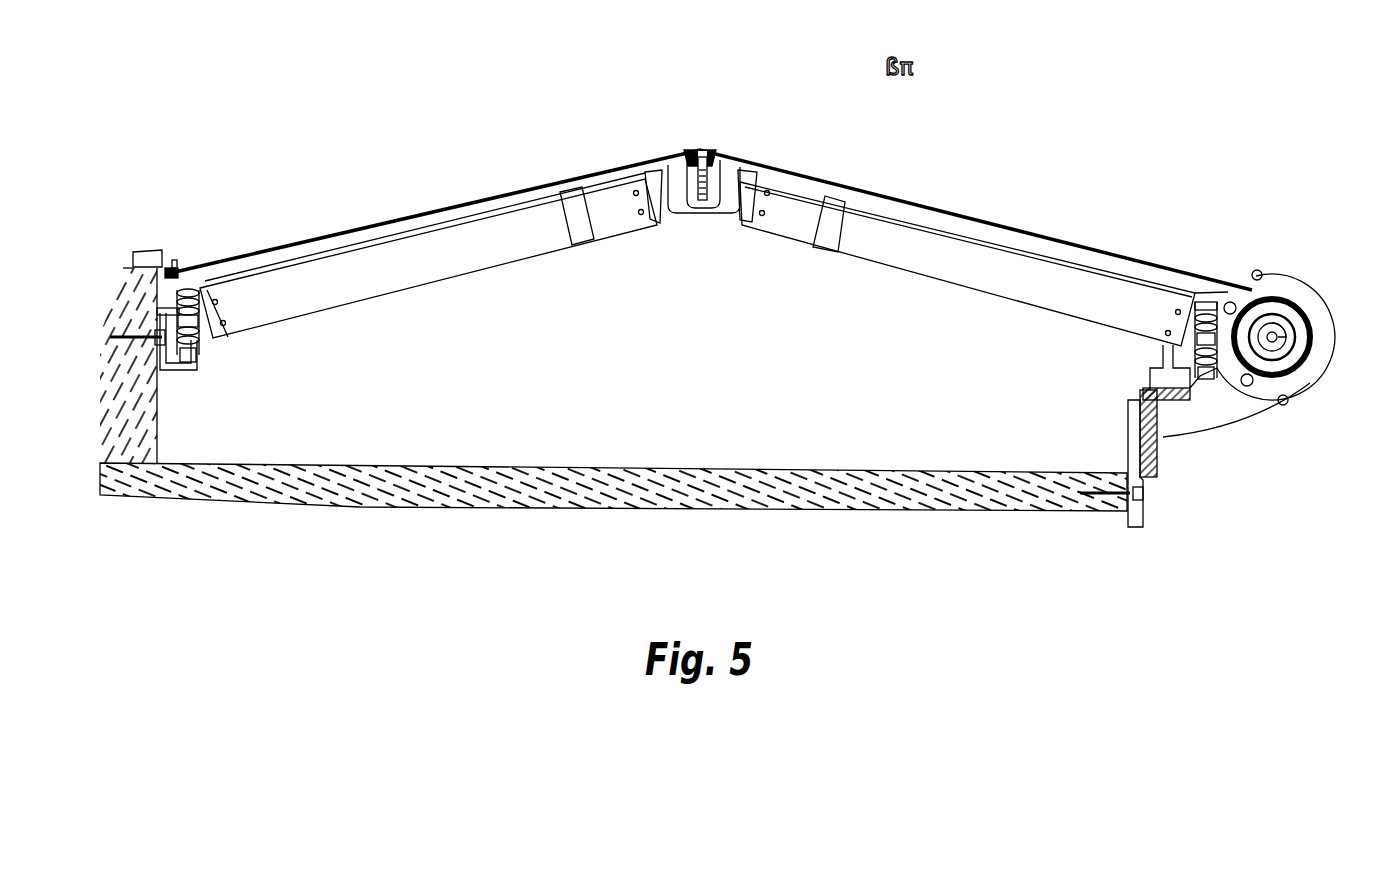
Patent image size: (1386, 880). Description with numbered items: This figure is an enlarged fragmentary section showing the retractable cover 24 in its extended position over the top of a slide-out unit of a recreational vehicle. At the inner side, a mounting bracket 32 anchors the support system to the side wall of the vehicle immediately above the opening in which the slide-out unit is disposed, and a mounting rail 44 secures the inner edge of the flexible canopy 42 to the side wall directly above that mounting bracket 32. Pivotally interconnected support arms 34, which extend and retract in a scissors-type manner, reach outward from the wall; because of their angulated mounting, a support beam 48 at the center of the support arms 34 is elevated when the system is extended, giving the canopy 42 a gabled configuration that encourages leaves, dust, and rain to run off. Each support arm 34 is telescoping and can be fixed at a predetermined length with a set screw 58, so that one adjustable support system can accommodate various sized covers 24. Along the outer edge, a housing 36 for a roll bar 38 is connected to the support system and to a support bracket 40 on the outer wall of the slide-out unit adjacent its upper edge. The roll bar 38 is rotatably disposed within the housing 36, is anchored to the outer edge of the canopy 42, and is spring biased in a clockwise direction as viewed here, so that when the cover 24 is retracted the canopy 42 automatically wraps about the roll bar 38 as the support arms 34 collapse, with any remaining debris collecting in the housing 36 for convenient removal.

The cover 24 is at (713, 222).
The mounting bracket 32 is at (228, 371).
The support arm 34 is at (471, 252).
The housing 36 is at (1258, 265).
The roll bar 38 is at (1310, 310).
The support bracket 40 is at (1160, 460).
The flexible canopy 42 is at (450, 208).
The mounting rail 44 is at (183, 263).
The support beam 48 is at (702, 158).
The set screw 58 is at (852, 190).